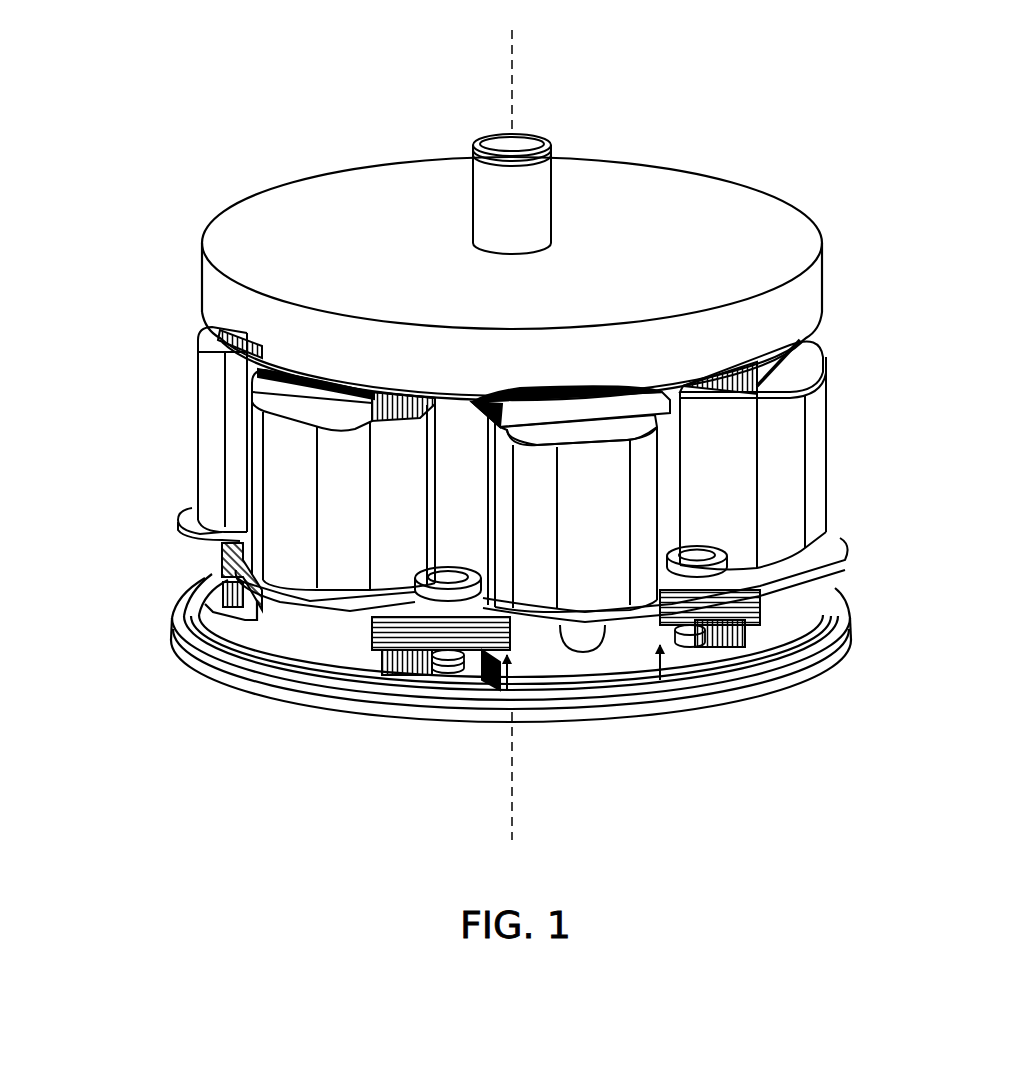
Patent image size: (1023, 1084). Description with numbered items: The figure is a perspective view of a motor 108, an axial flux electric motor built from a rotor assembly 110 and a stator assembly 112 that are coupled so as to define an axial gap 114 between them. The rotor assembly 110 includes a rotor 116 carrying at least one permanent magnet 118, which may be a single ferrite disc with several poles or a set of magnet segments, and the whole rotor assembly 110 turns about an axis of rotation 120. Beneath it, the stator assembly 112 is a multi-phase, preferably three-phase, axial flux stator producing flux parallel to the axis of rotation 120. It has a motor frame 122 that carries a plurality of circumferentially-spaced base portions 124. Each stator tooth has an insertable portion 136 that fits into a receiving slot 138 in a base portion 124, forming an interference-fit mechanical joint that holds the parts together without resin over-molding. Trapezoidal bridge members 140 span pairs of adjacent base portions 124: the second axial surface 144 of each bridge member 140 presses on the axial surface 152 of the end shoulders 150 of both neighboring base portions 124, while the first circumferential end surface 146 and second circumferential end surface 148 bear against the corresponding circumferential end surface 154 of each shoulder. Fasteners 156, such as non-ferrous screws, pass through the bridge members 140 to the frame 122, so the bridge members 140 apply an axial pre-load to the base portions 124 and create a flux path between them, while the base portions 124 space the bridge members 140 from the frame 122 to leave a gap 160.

The motor 108 is at (863, 150).
The rotor assembly 110 is at (862, 213).
The stator assembly 112 is at (898, 470).
The axial gap 114 is at (840, 319).
The rotor 116 is at (806, 290).
The permanent magnet 118 is at (700, 393).
The axis of rotation 120 is at (515, 66).
The motor frame 122 is at (824, 605).
The base portions 124 is at (617, 653).
The insertable portion 136 is at (556, 650).
The receiving slot 138 is at (578, 650).
The bridge members 140 is at (418, 672).
The second axial surface 144 is at (717, 653).
The first circumferential end surface 146 is at (385, 625).
The second circumferential end surface 148 is at (470, 655).
The end shoulders 150 is at (478, 662).
The axial surface 152 is at (480, 668).
The circumferential end surface 154 is at (510, 660).
The fasteners 156 is at (447, 560).
The gap 160 is at (388, 652).